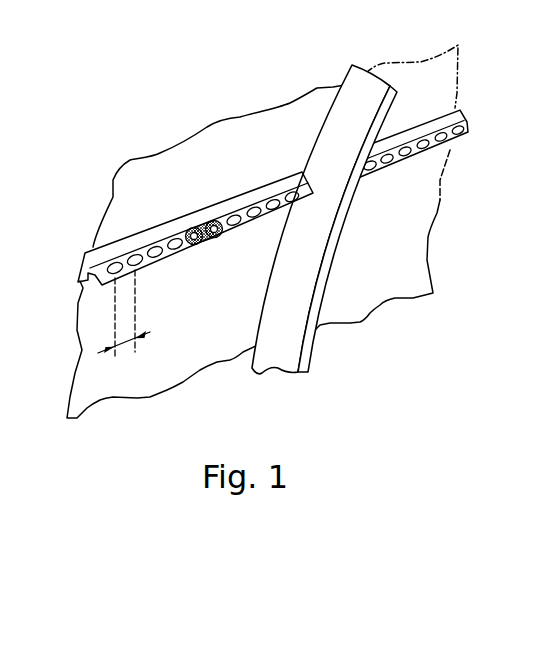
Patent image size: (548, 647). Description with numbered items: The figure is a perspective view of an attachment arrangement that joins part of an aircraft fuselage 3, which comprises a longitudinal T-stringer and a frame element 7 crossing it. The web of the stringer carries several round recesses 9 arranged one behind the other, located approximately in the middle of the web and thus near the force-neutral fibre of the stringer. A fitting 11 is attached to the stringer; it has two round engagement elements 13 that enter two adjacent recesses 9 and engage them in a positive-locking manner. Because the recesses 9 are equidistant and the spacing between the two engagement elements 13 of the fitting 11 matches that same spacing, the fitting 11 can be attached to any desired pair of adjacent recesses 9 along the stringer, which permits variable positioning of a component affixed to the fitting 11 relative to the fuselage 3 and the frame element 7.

The aircraft fuselage 3 is at (219, 116).
The frame element 7 is at (353, 87).
The round recesses 9 is at (272, 213).
The fitting 11 is at (193, 245).
The engagement elements 13 is at (200, 238).